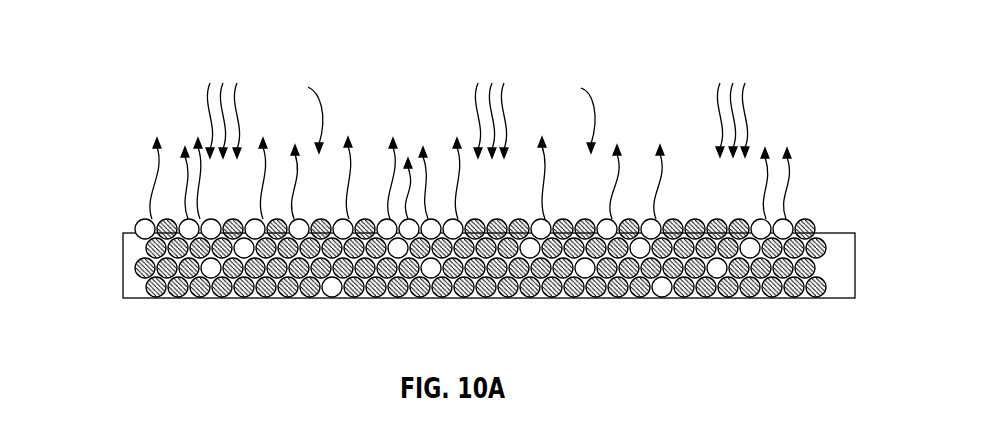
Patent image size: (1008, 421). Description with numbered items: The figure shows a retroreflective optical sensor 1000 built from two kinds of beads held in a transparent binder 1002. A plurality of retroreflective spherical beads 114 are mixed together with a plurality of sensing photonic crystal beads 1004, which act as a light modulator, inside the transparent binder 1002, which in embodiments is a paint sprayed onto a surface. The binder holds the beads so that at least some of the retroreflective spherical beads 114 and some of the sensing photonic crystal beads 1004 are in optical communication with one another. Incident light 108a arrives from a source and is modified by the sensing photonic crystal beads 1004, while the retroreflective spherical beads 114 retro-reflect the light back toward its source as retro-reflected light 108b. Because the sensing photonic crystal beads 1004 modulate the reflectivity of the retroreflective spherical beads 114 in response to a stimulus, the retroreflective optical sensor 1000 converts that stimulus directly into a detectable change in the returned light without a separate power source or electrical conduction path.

The retroreflective optical sensor 1000 is at (173, 53).
The transparent binder 1002 is at (838, 298).
The sensing photonic crystal beads 1004 is at (498, 299).
The retroreflective spherical beads 114 is at (373, 213).
The incident light 108a is at (242, 95).
The retro-reflected light 108b is at (187, 177).